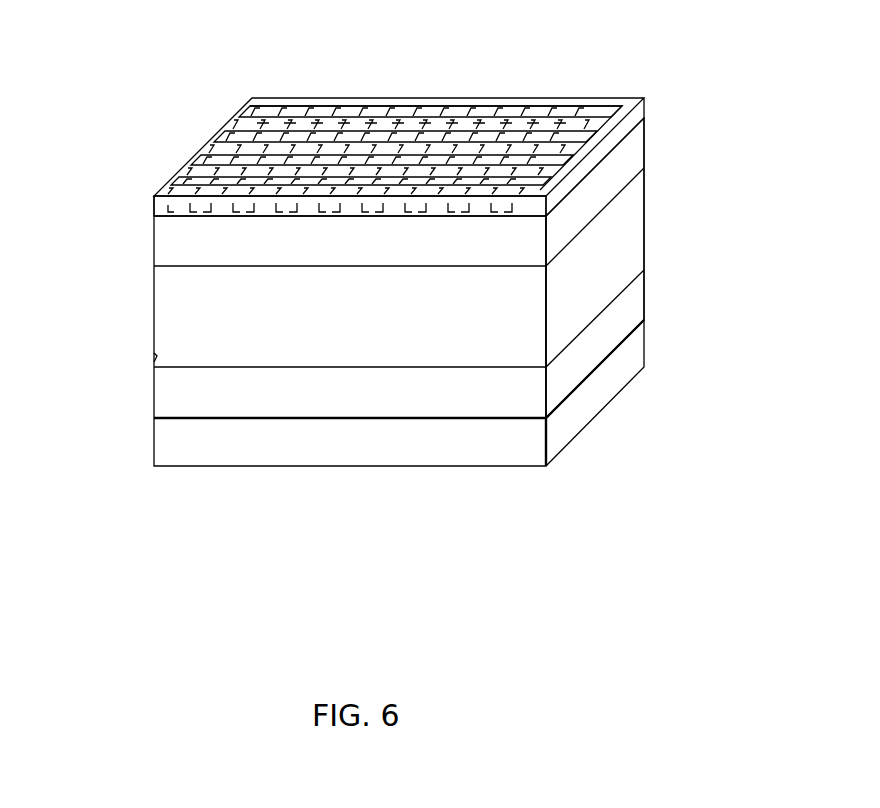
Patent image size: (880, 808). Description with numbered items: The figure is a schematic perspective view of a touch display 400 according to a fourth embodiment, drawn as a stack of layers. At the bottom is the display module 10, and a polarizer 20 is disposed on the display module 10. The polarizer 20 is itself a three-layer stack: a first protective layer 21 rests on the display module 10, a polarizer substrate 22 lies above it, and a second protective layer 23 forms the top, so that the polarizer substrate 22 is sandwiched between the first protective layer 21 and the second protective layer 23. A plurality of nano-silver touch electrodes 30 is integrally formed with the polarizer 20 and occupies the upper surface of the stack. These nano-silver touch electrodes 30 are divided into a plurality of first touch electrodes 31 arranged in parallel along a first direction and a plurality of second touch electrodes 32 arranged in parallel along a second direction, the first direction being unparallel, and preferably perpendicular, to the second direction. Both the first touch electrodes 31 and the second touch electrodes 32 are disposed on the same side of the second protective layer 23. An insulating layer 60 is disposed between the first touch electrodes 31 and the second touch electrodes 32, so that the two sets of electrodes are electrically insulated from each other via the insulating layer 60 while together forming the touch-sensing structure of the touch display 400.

The touch display 400 is at (240, 58).
The display module 10 is at (632, 359).
The polarizer 20 is at (726, 147).
The first protective layer 21 is at (632, 300).
The polarizer substrate 22 is at (632, 234).
The second protective layer 23 is at (632, 156).
The nano-silver touch electrodes 30 is at (86, 78).
The first touch electrodes 31 is at (222, 153).
The second touch electrodes 32 is at (283, 125).
The insulating layer 60 is at (627, 126).